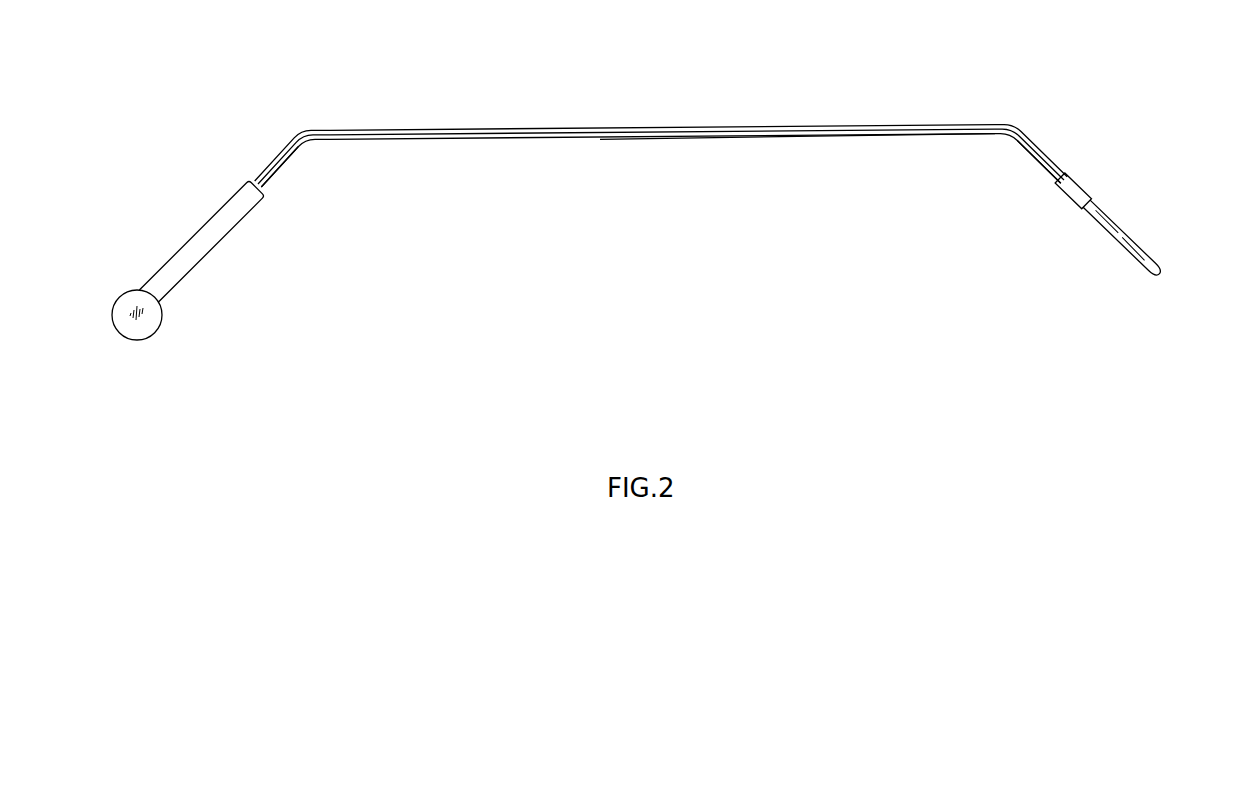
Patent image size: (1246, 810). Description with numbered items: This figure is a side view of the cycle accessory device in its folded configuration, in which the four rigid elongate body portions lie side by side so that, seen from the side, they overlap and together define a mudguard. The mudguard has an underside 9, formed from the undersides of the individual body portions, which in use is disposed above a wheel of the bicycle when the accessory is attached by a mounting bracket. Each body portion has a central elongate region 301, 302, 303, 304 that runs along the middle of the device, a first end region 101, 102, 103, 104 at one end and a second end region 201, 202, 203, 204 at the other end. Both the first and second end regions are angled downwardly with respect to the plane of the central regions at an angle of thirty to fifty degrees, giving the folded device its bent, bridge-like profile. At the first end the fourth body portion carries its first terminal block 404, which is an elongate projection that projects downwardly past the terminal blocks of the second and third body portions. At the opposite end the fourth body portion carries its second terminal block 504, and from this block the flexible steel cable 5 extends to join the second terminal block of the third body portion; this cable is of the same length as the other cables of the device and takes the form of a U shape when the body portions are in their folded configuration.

The underside 9 is at (570, 140).
The first end region 101 is at (273, 158).
The first end region 102 is at (268, 104).
The first end region 103 is at (296, 105).
The first end region 104 is at (324, 105).
The second end region 201 is at (1053, 155).
The second end region 202 is at (1061, 103).
The second end region 203 is at (1092, 105).
The second end region 204 is at (1131, 105).
The central elongate region 301 is at (673, 88).
The central elongate region 302 is at (662, 91).
The central elongate region 303 is at (662, 93).
The central elongate region 304 is at (797, 93).
The first terminal block 404 is at (185, 277).
The second terminal block 504 is at (1060, 197).
The flexible steel cable 5 is at (1117, 218).